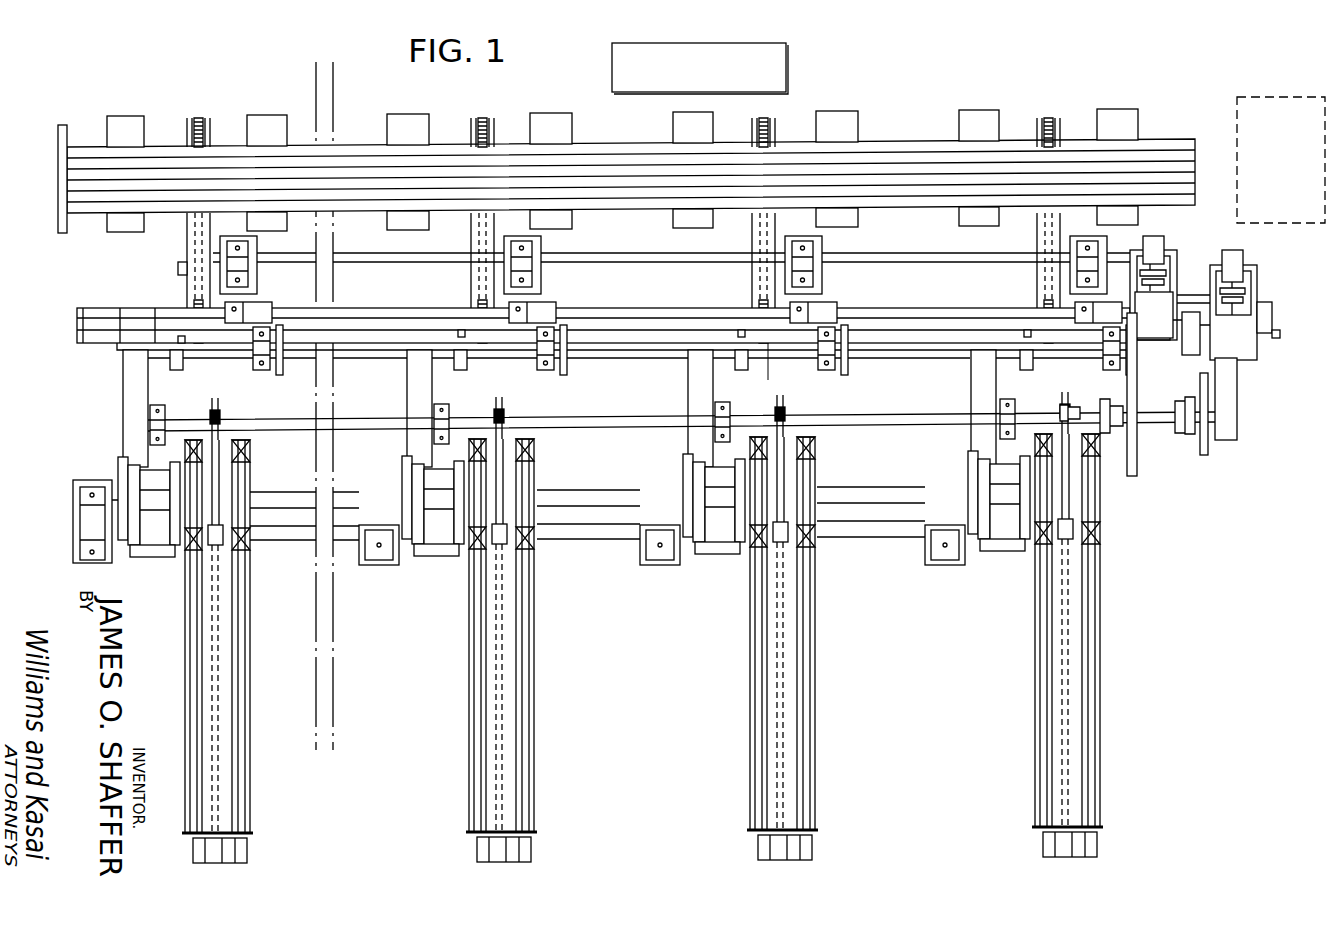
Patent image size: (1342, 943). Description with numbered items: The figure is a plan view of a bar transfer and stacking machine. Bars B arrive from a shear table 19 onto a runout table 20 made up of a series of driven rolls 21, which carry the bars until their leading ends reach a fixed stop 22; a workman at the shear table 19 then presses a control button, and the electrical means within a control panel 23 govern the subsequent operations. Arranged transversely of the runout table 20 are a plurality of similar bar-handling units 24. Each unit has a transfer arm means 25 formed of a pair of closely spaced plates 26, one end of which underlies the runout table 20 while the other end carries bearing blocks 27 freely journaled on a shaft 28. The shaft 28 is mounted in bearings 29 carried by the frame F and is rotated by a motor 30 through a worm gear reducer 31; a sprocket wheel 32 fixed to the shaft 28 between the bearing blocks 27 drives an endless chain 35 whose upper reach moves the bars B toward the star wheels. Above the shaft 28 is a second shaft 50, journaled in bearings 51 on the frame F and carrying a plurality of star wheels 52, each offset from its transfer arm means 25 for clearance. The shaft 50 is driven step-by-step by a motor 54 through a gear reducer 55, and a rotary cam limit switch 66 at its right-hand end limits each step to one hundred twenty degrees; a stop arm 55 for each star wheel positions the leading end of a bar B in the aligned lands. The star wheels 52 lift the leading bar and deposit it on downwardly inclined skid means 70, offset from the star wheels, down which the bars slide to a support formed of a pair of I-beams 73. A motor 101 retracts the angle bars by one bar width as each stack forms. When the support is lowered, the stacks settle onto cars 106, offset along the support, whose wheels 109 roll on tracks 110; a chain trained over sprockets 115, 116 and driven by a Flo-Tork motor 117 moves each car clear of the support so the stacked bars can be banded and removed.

The shear table 19 is at (1243, 97).
The runout table 20 is at (1119, 96).
The driven rolls 21 is at (264, 122).
The fixed stop 22 is at (64, 130).
The control panel 23 is at (786, 70).
The bar-handling units 24 is at (270, 780).
The transfer arm means 25 is at (178, 244).
The plates 26 is at (204, 118).
The bearing blocks 27 is at (752, 322).
The shaft 28 is at (905, 330).
The bearings 29 is at (240, 312).
The motor 30 is at (1160, 246).
The worm gear reducer 31 is at (1155, 322).
The sprocket wheel 32 is at (767, 345).
The endless chain 35 is at (200, 280).
The shaft 50 is at (920, 345).
The bearings 51 is at (262, 368).
The star wheels 52 is at (279, 372).
The motor 54 is at (1236, 268).
The stop arm 55 is at (181, 336).
The rotary cam limit switch 66 is at (1268, 320).
The skid means 70 is at (116, 392).
The I-beams 73 is at (172, 540).
The motor 101 is at (1206, 456).
The cars 106 is at (233, 493).
The wheels 109 is at (250, 548).
The tracks 110 is at (248, 652).
The sprocket 115 is at (500, 410).
The sprocket 116 is at (220, 676).
The Flo-Tork motor 117 is at (1134, 476).
The bars B is at (905, 152).
The frame F is at (86, 299).